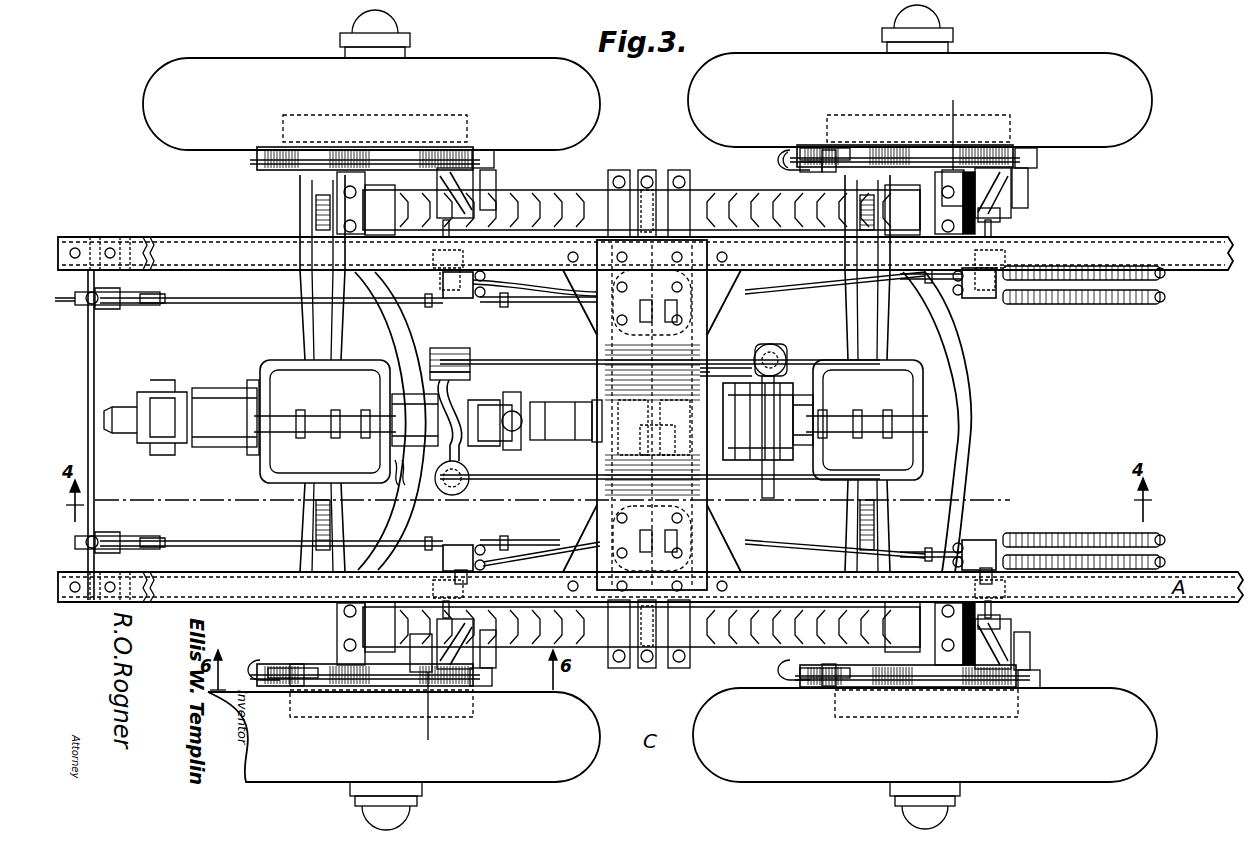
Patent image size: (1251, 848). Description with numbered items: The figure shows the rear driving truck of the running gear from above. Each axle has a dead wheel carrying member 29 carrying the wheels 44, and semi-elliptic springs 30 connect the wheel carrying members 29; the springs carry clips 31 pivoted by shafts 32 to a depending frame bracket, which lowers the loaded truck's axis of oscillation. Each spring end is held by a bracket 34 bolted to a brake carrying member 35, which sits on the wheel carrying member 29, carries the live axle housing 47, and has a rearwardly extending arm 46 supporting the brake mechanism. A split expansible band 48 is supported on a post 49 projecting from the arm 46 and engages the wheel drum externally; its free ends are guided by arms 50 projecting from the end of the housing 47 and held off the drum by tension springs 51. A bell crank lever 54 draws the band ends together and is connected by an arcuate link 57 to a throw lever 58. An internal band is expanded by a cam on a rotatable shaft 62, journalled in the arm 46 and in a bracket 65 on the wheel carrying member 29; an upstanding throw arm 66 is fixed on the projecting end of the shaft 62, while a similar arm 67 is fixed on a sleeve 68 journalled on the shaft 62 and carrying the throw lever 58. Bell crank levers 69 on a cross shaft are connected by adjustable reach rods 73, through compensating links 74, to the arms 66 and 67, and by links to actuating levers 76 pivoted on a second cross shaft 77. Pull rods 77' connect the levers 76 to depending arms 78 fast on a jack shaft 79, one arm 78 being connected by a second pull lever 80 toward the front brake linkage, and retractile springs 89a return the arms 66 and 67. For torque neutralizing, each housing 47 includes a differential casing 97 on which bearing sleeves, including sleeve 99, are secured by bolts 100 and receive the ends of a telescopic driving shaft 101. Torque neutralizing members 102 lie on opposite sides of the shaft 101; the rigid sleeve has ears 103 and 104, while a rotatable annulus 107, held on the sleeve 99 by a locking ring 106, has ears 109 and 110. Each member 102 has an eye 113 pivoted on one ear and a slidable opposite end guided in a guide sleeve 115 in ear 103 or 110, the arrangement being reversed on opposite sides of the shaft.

The wheel carrying member 29 is at (970, 398).
The springs 30 is at (577, 204).
The clips 31 is at (648, 172).
The shafts 32 is at (655, 208).
The brackets 34 is at (343, 240).
The brake carrying members 35 is at (1000, 640).
The wheels 44 is at (470, 64).
The rearwardly extending arm 46 is at (496, 184).
The live axle housing 47 is at (843, 318).
The split expansible band 48 is at (350, 148).
The post or arm 49 is at (494, 160).
The guide arms 50 is at (828, 180).
The tension springs 51 is at (828, 150).
The bell crank lever 54 is at (792, 152).
The arcuate link 57 is at (408, 160).
The throw lever 58 is at (1012, 200).
The rotatable shaft 62 is at (1000, 204).
The bracket 65 is at (410, 300).
The upstanding throw arm 66 is at (452, 300).
The arm 67 is at (454, 580).
The sleeve 68 is at (998, 228).
The bell crank levers 69 is at (996, 256).
The adjustable reach rods 73 is at (766, 296).
The compensating links 74 is at (482, 258).
The actuating levers 76 is at (680, 310).
The second cross shaft 77 is at (576, 314).
The pull rods 77' is at (330, 415).
The depending arms 78 is at (104, 308).
The jack shaft 79 is at (97, 487).
The second pull lever 80 is at (62, 303).
The retractile springs 89a is at (1166, 297).
The casing 97 is at (591, 421).
The bearing sleeve 99 is at (836, 450).
The bolts 100 is at (406, 478).
The telescopic driving shaft 101 is at (560, 403).
The torque neutralizing members 102 is at (580, 353).
The ear 103 is at (450, 351).
The ear 104 is at (466, 458).
The locking ring 106 is at (728, 458).
The rotatable annulus 107 is at (748, 366).
The ear 109 is at (790, 346).
The ear 110 is at (800, 498).
The eye 113 is at (597, 497).
The guide sleeves 115 is at (470, 374).